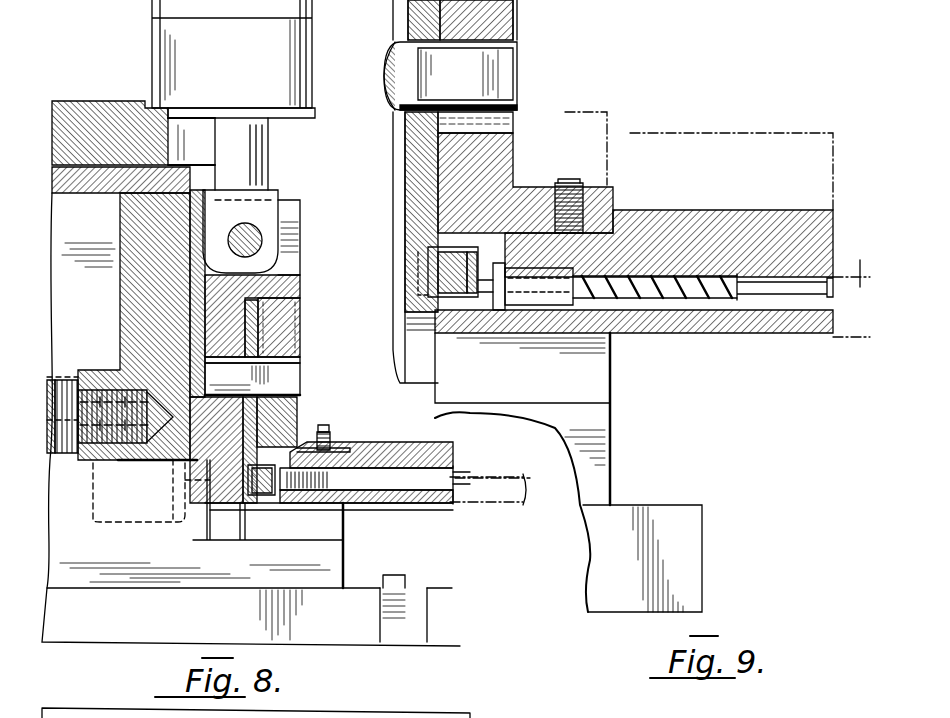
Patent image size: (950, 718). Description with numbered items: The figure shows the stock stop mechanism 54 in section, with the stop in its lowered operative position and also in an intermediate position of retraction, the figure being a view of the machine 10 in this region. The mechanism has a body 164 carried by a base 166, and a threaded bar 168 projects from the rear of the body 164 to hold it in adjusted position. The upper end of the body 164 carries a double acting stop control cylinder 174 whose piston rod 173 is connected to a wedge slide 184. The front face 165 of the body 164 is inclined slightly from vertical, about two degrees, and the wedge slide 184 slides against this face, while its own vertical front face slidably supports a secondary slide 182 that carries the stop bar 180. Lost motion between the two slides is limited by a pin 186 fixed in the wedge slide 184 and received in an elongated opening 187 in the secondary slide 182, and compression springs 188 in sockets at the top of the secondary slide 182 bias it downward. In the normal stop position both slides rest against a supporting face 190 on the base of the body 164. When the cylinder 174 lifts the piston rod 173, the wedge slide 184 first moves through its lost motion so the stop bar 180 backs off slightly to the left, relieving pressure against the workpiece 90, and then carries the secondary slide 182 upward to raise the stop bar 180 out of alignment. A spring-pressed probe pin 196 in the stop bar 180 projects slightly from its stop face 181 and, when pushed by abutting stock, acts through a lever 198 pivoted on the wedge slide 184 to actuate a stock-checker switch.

In FIG. 8, the stock stop mechanism 54 is at (73, 59).
In FIG. 8, the stop control cylinder 174 is at (246, 66).
In FIG. 8, the piston rod 173 is at (252, 144).
In FIG. 8, the body 164 is at (106, 317).
In FIG. 9, the body 164 is at (595, 430).
In FIG. 8, the inclined front face 165 is at (205, 331).
In FIG. 8, the tool 10 is at (66, 419).
In FIG. 9, the tool 10 is at (496, 496).
In FIG. 8, the threaded bar 168 is at (62, 455).
In FIG. 8, the wedge slide 184 is at (278, 289).
In FIG. 8, the compression springs 188 is at (285, 316).
In FIG. 8, the secondary slide 182 is at (300, 327).
In FIG. 9, the secondary slide 182 is at (595, 373).
In FIG. 8, the elongated opening 187 is at (283, 358).
In FIG. 9, the elongated opening 187 is at (503, 120).
In FIG. 8, the pin 186 is at (285, 381).
In FIG. 9, the pin 186 is at (477, 87).
In FIG. 8, the stop bar 180 is at (425, 497).
In FIG. 9, the stop bar 180 is at (768, 322).
In FIG. 8, the supporting face 190 is at (326, 537).
In FIG. 8, the workpiece 90 is at (491, 507).
In FIG. 9, the workpiece 90 is at (515, 518).
In FIG. 8, the base 166 is at (103, 636).
In FIG. 9, the base 166 is at (682, 550).
In FIG. 9, the stop face 181 is at (835, 233).
In FIG. 9, the probe pin 196 is at (802, 292).
In FIG. 9, the lever 198 is at (447, 264).